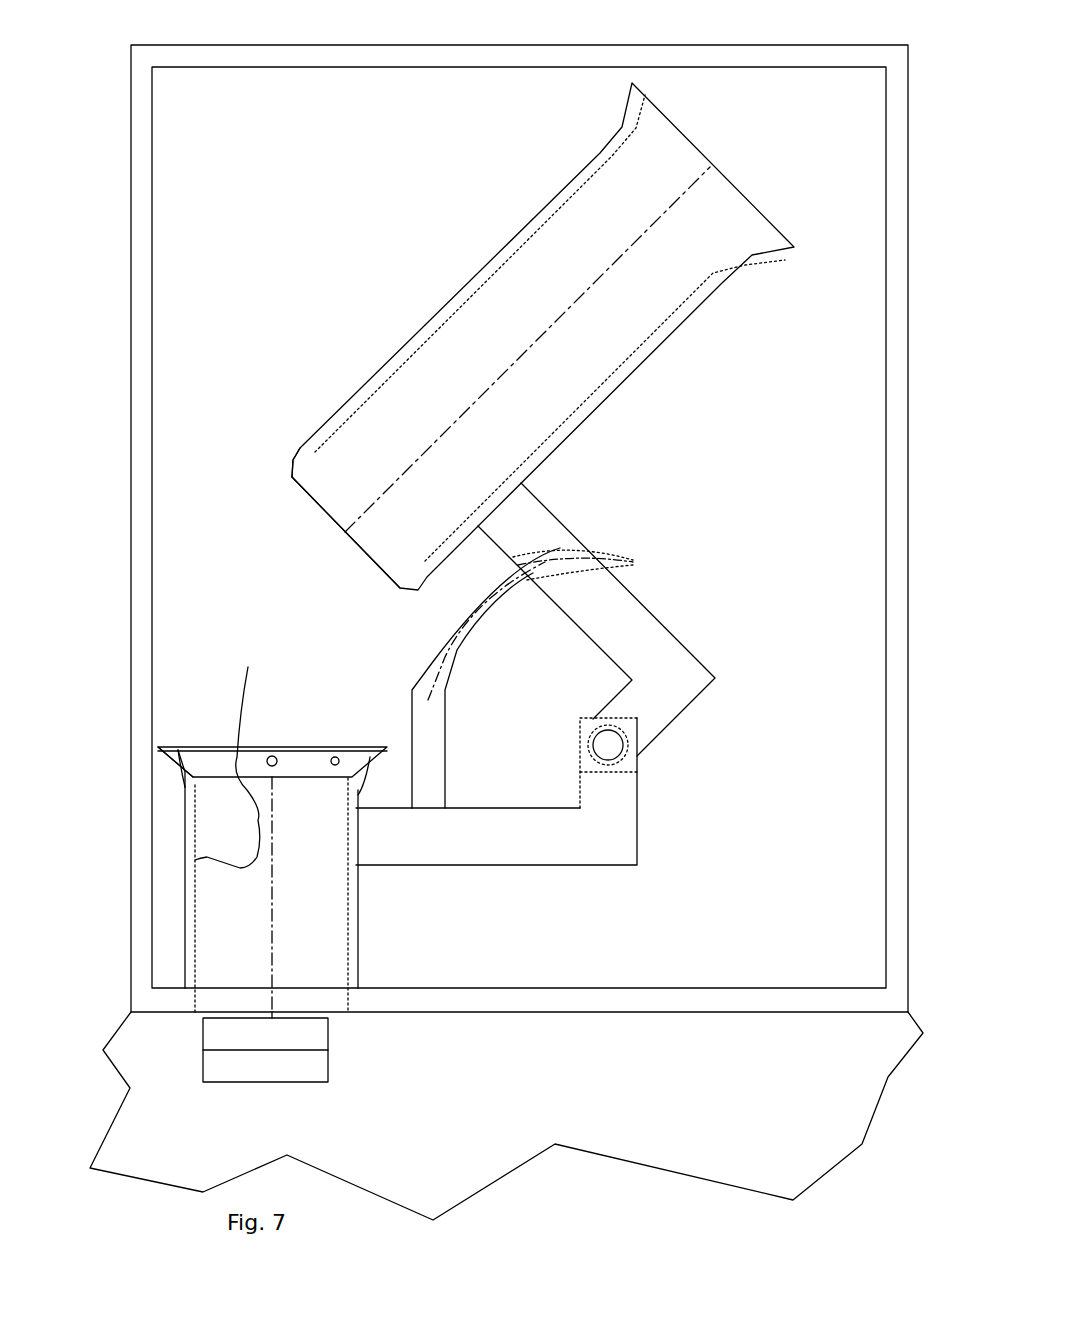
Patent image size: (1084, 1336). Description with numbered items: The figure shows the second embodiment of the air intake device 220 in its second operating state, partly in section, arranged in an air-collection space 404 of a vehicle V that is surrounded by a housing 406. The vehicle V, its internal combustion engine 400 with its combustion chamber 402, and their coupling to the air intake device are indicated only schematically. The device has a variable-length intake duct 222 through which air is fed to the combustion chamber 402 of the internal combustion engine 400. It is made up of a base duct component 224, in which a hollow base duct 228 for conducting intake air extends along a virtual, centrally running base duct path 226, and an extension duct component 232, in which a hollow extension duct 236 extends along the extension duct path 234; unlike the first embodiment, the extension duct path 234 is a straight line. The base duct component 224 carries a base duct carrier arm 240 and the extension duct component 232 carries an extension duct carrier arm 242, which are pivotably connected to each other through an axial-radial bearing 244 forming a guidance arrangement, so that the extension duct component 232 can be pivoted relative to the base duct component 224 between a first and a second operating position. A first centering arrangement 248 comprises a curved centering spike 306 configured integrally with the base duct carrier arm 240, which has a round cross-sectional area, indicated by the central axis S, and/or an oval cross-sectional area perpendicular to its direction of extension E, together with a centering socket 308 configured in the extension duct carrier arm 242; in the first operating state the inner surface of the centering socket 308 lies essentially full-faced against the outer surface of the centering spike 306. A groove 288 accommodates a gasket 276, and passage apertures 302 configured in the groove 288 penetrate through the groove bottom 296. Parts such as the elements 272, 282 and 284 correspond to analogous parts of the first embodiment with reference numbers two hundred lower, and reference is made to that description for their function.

The housing 406 is at (390, 52).
The air-collection space 404 is at (362, 272).
The extension duct component 232 is at (488, 266).
The extension duct path 234 is at (374, 496).
The extension duct 236 is at (552, 240).
The extension duct component element (corresponds to first-embodiment element 72) 272 is at (294, 463).
The extension duct component element (corresponds to first-embodiment element 84) 284 is at (343, 527).
The air intake device 220 is at (720, 441).
The extension duct carrier arm 242 is at (655, 650).
The axial-radial bearing 244 is at (612, 750).
The base duct carrier arm 240 is at (537, 848).
The first centering arrangement 248 is at (432, 621).
The centering spike 306 is at (490, 622).
The centering socket 308 is at (583, 551).
The intake duct 222 is at (345, 932).
The base duct component 224 is at (352, 916).
The base duct 228 is at (325, 878).
The second-embodiment element (corresponds to first-embodiment element 82) 282 is at (272, 752).
The passage apertures 302 is at (168, 765).
The groove 288 is at (193, 762).
The groove bottom 296 is at (183, 767).
The gasket 276 is at (234, 756).
The base duct path 226 is at (272, 938).
The combustion chamber 402 is at (217, 1033).
The internal combustion engine 400 is at (365, 1048).
The central axis S is at (506, 586).
The direction of extension E is at (440, 648).
The vehicle V is at (777, 1180).